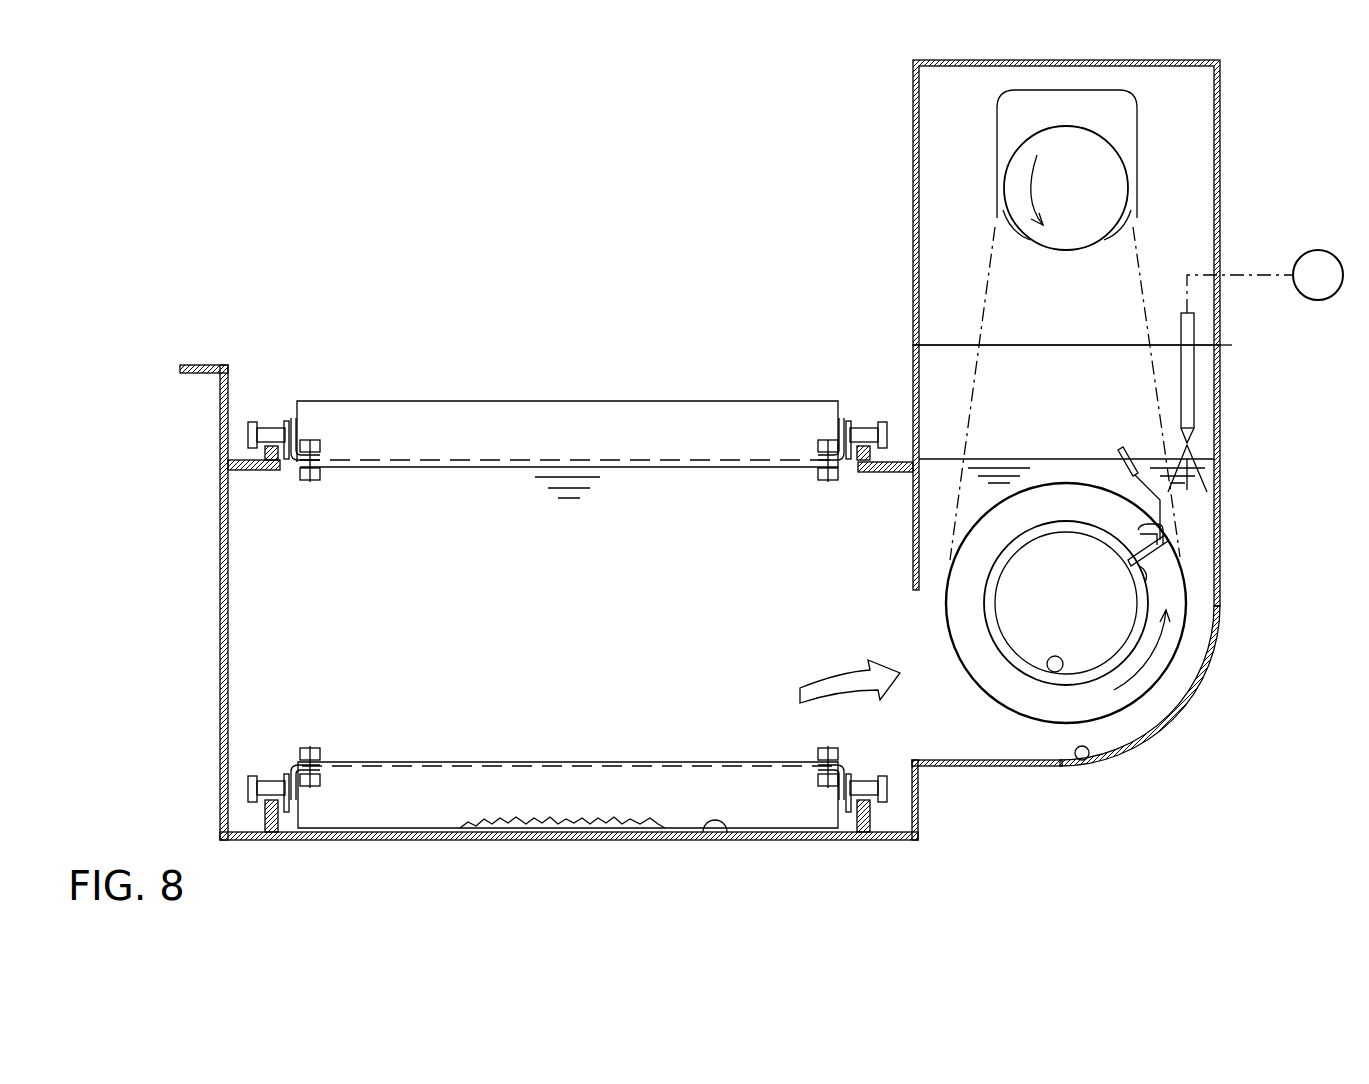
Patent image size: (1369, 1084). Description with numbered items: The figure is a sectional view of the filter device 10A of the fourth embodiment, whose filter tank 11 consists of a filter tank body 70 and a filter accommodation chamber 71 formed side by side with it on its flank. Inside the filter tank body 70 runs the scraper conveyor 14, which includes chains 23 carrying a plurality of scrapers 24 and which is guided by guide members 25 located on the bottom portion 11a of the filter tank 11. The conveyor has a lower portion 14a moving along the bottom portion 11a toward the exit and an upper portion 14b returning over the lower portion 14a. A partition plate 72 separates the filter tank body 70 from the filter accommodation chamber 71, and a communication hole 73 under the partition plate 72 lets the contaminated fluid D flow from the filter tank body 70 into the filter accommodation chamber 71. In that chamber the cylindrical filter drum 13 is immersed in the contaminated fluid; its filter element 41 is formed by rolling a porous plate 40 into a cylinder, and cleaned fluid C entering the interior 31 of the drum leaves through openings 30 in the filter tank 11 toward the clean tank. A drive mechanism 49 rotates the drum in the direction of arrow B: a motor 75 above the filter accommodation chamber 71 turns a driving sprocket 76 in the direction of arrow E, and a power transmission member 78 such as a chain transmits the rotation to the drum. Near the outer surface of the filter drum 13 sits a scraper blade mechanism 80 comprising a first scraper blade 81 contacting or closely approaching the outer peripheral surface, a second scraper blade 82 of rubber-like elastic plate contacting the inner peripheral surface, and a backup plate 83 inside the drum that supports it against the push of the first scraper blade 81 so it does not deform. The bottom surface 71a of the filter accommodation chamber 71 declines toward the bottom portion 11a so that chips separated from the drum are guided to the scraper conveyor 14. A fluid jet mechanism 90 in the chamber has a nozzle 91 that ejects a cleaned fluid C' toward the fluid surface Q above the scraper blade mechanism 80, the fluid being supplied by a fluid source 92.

The filter device 10A is at (687, 200).
The filter tank 11 is at (220, 530).
The bottom portion 11a is at (722, 840).
The filter drum 13 is at (1108, 718).
The scraper conveyor 14 is at (415, 398).
The lower portion 14a is at (348, 815).
The upper portion 14b is at (351, 399).
The chains 23 is at (273, 422).
The scrapers 24 is at (506, 410).
The guide members 25 is at (265, 813).
The openings 30 is at (1055, 672).
The interior 31 is at (1066, 603).
The porous plate 40 is at (945, 625).
The filter element 41 is at (943, 600).
The drive mechanism 49 is at (1178, 177).
The filter tank body 70 is at (547, 612).
The filter accommodation chamber 71 is at (1221, 620).
The bottom surface 71a is at (1088, 760).
The partition plate 72 is at (912, 545).
The communication hole 73 is at (919, 712).
The motor 75 is at (1127, 123).
The driving sprocket 76 is at (1003, 196).
The power transmission member 78 is at (978, 320).
The scraper blade mechanism 80 is at (1172, 537).
The first scraper blade 81 is at (1163, 513).
The second scraper blade 82 is at (1145, 572).
The backup plate 83 is at (1140, 543).
The fluid jet mechanism 90 is at (1205, 398).
The nozzle 91 is at (1195, 437).
The fluid source 92 is at (1316, 255).